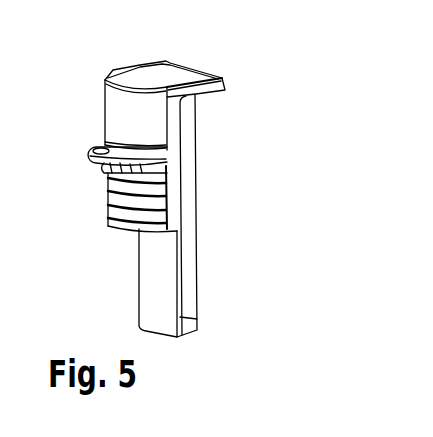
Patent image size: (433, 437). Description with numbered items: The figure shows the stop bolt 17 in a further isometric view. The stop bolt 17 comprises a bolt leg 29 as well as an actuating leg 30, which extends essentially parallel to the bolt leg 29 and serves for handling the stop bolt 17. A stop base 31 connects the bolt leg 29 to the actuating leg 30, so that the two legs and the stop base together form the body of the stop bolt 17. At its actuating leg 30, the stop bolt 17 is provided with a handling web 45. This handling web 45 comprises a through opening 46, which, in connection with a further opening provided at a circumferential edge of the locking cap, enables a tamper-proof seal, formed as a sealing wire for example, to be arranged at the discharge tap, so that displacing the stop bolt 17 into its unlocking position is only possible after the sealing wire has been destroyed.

The stop bolt 17 is at (209, 159).
The bolt leg 29 is at (192, 270).
The actuating leg 30 is at (115, 112).
The stop base 31 is at (153, 72).
The handling web 45 is at (165, 163).
The through opening 46 is at (105, 172).